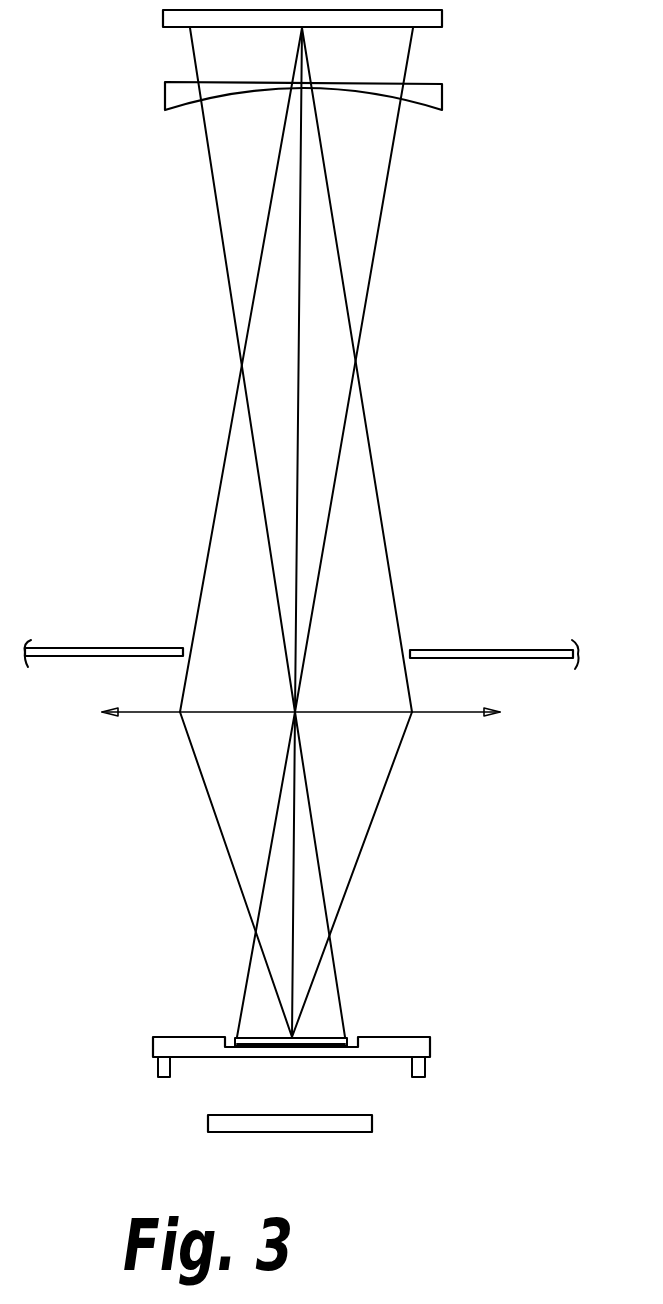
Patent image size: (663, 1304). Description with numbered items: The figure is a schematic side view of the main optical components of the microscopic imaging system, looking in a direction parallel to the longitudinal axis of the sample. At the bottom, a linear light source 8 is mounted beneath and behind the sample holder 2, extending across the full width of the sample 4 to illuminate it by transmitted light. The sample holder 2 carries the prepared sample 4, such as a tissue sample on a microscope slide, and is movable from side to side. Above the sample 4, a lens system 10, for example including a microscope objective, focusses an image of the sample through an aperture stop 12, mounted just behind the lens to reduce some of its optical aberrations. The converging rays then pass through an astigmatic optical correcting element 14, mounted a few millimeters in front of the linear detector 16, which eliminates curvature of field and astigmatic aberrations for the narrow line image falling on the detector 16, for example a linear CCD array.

The sample holder 2 is at (400, 1047).
The sample 4 is at (322, 1037).
The linear light source 8 is at (358, 1125).
The lens system 10 is at (458, 713).
The aperture stop 12 is at (500, 650).
The astigmatic optical correcting element 14 is at (437, 97).
The linear detector 16 is at (435, 22).